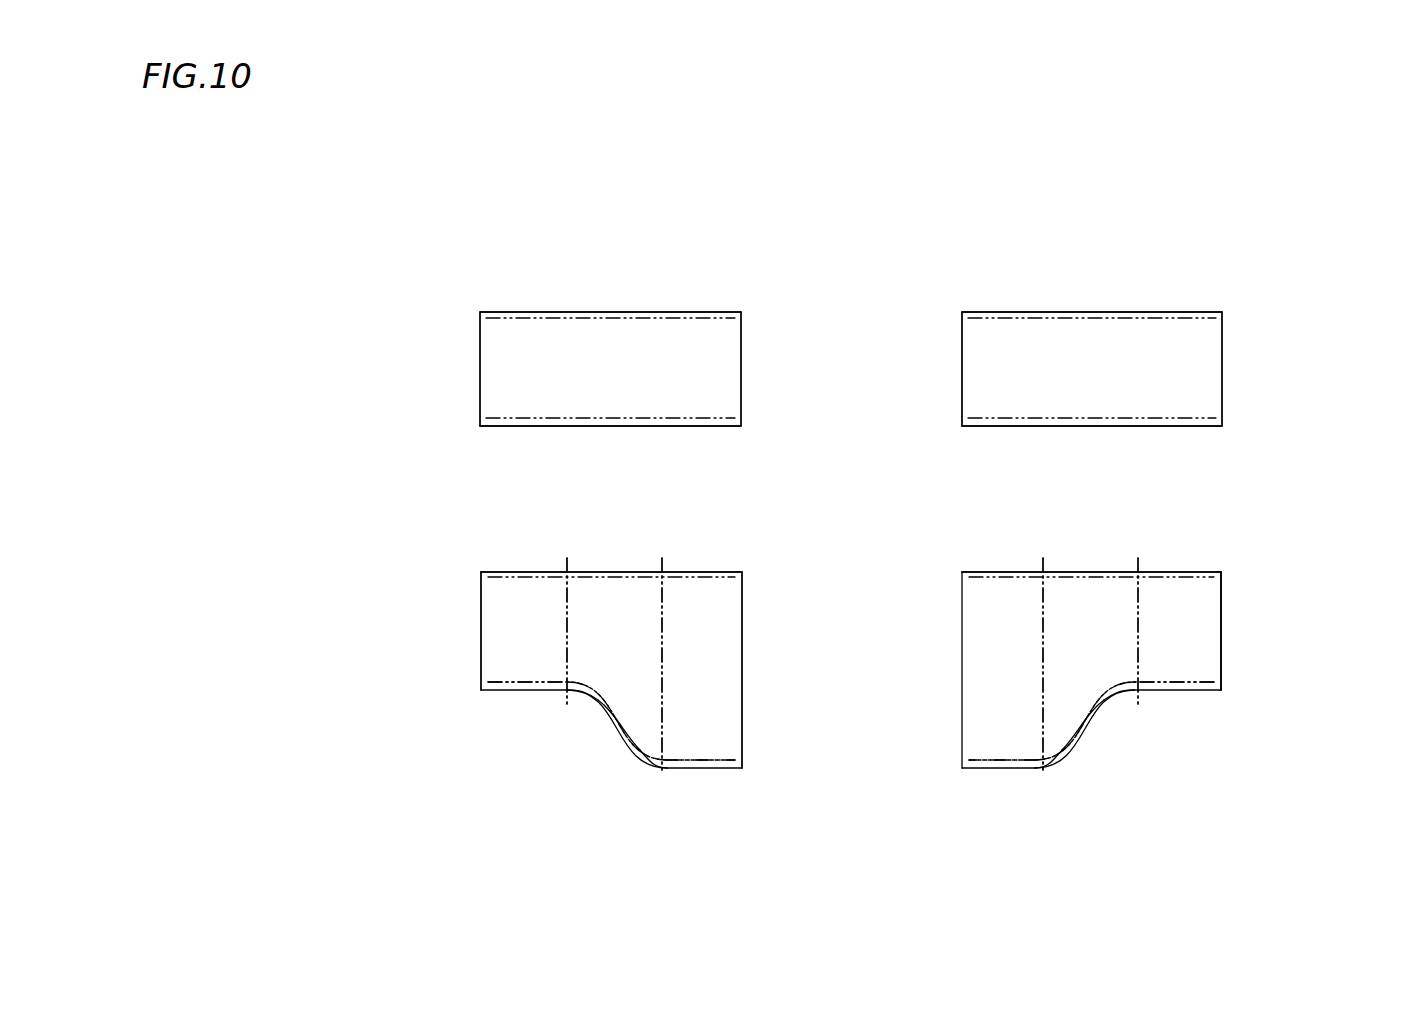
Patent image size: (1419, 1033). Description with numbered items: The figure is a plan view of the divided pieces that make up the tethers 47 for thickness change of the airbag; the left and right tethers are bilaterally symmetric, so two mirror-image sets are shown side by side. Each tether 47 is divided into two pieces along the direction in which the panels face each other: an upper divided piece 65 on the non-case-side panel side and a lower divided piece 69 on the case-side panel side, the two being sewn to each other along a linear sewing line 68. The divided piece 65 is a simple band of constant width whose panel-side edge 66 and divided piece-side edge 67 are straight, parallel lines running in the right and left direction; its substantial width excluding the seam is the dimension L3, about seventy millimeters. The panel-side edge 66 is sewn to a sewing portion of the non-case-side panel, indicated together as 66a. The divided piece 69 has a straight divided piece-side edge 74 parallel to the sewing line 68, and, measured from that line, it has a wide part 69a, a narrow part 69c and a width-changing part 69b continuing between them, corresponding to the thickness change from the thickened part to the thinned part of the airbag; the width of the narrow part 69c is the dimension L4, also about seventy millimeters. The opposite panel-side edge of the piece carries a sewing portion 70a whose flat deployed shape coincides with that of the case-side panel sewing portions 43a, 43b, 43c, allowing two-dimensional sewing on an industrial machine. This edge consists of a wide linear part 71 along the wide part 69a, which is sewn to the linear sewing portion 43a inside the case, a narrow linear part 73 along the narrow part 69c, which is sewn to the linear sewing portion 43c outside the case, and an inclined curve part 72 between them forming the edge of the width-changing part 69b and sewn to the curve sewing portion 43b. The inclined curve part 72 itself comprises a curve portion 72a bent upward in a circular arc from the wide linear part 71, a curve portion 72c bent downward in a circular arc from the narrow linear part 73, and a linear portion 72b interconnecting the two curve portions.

The tether for thickness change 47 is at (817, 197).
The divided piece at non-case-side panel side 65 is at (685, 300).
The divided piece at case-side panel side 69 is at (737, 538).
The panel-side edge 66 is at (565, 312).
The upper edge line (41a) 66a is at (507, 312).
The divided piece-side edge 67 is at (507, 418).
The linear sewing line 68 is at (605, 577).
The divided piece-side edge 74 is at (512, 572).
The wide part 69a is at (703, 625).
The width-changing part 69b is at (622, 622).
The narrow part 69c is at (516, 613).
The sewing portion of panel-side edge 70a is at (851, 721).
The sewing portion of case-side panel 43a is at (723, 763).
The curve sewing portion of case-side panel 43b is at (632, 730).
The sewing portion of case-side panel 43c is at (533, 682).
The narrow linear part 73 is at (500, 685).
The inclined curve part 72 is at (660, 866).
The curve portion 72a is at (647, 760).
The linear portion 72b is at (617, 718).
The curve portion 72c is at (580, 683).
The wide linear part 71 is at (693, 770).
The width dimension of divided piece L3 is at (450, 417).
The width dimension of narrow part L4 is at (450, 676).